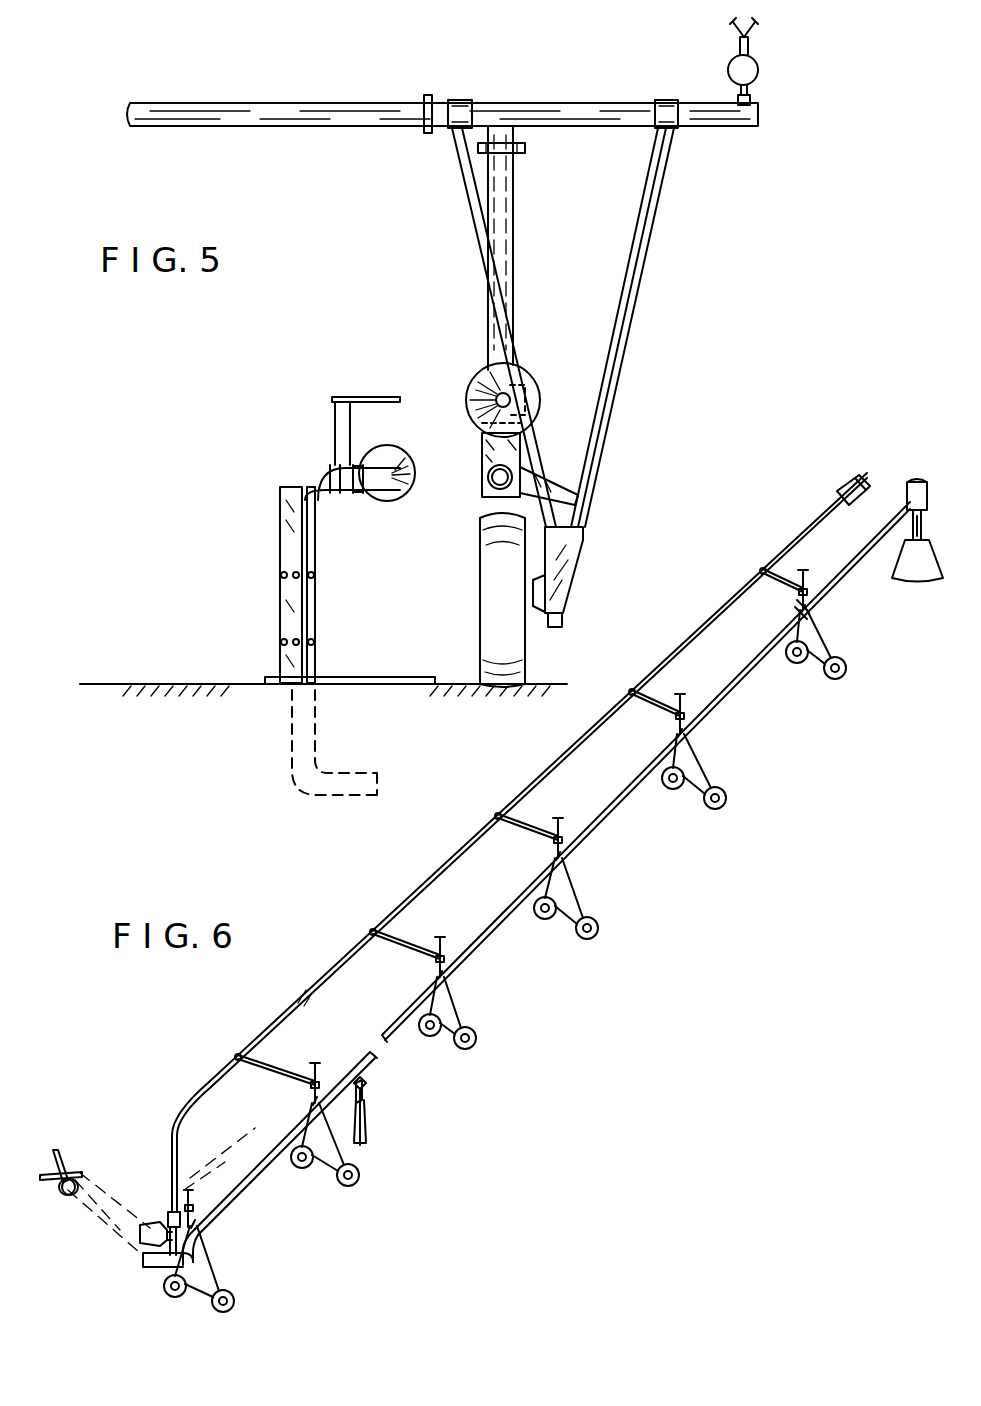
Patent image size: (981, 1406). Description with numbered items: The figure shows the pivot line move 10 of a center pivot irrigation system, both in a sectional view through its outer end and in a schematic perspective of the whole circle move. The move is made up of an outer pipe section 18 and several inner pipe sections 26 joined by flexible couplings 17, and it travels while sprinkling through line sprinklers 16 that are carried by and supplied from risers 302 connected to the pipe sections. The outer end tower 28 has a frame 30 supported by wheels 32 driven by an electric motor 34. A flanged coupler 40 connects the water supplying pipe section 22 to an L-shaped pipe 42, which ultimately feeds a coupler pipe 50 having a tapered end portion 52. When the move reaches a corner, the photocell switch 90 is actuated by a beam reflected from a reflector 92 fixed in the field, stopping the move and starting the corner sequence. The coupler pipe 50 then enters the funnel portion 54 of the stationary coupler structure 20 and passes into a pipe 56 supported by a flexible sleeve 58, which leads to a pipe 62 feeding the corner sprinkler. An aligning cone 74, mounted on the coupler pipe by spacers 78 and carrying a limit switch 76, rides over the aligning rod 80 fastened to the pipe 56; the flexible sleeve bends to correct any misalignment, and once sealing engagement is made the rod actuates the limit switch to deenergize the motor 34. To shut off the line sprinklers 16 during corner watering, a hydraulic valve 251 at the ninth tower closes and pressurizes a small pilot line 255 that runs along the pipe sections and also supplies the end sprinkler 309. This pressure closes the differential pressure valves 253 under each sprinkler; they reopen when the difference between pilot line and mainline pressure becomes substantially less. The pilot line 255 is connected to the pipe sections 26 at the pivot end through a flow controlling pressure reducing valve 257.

In FIG. 5, the pivot line move 10 is at (607, 72).
In FIG. 6, the pivot line move 10 is at (640, 815).
In FIG. 6, the line sprinklers 16 is at (805, 565).
In FIG. 6, the flexible couplings 17 is at (568, 860).
In FIG. 5, the outer pipe section 18 is at (628, 101).
In FIG. 6, the outer pipe section 18 is at (262, 1170).
In FIG. 5, the stationary coupler structure 20 is at (268, 553).
In FIG. 6, the stationary coupler structure 20 is at (58, 1145).
In FIG. 5, the water supplying pipe section 22 is at (503, 108).
In FIG. 6, the inner pipe sections 26 is at (508, 922).
In FIG. 5, the outer end tower 28 is at (622, 400).
In FIG. 6, the outer end tower 28 is at (225, 1270).
In FIG. 5, the frame 30 is at (628, 322).
In FIG. 5, the wheels 32 is at (493, 617).
In FIG. 6, the wheels 32 is at (845, 670).
In FIG. 5, the electric motor 34 is at (482, 466).
In FIG. 5, the flanged coupler 40 is at (527, 148).
In FIG. 5, the L-shaped pipe 42 is at (513, 250).
In FIG. 6, the coupler pipe 50 is at (145, 1258).
In FIG. 5, the tapered end portion 52 is at (488, 477).
In FIG. 5, the funnel portion 54 is at (398, 448).
In FIG. 6, the funnel portion 54 is at (67, 1197).
In FIG. 5, the pipe 56 is at (372, 488).
In FIG. 5, the flexible sleeve 58 is at (332, 463).
In FIG. 5, the pipe 62 is at (318, 578).
In FIG. 5, the aligning cone 74 is at (470, 378).
In FIG. 6, the aligning cone 74 is at (145, 1220).
In FIG. 5, the limit switch 76 is at (535, 392).
In FIG. 5, the spacers 78 is at (531, 433).
In FIG. 5, the aligning rod 80 is at (372, 396).
In FIG. 6, the aligning rod 80 is at (80, 1168).
In FIG. 6, the photocell switch 90 is at (358, 1078).
In FIG. 6, the reflector 92 is at (367, 1083).
In FIG. 6, the hydraulic valve 251 is at (170, 1212).
In FIG. 6, the differential pressure valves 253 is at (565, 830).
In FIG. 6, the pilot line 255 is at (473, 838).
In FIG. 6, the pressure reducing valve 257 is at (838, 490).
In FIG. 6, the risers 302 is at (800, 600).
In FIG. 5, the end sprinkler 309 is at (752, 32).
In FIG. 6, the end sprinkler 309 is at (190, 1188).